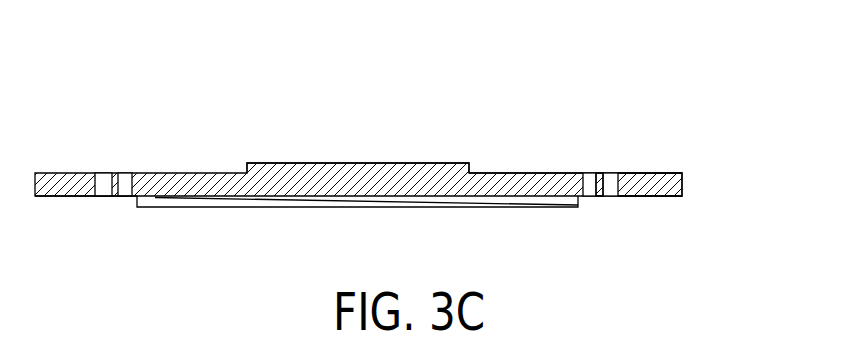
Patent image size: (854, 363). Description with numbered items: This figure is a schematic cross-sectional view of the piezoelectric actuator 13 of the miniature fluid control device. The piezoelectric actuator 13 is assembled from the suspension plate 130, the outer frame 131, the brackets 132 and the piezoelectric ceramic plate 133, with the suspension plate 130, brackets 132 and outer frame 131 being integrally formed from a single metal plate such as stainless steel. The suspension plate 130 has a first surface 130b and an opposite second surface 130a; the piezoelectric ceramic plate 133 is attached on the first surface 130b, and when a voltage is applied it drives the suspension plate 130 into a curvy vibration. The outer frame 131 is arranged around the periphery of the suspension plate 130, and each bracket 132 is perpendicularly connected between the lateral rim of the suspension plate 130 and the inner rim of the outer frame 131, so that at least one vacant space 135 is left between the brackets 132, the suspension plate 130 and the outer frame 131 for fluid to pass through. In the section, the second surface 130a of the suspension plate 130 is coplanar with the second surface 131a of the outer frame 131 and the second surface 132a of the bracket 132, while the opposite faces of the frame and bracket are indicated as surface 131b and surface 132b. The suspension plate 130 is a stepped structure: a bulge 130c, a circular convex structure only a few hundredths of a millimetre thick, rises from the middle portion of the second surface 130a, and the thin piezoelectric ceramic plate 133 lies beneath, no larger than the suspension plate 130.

The piezoelectric actuator 13 is at (110, 34).
The suspension plate 130 is at (223, 156).
The second surface of the suspension plate 130a is at (530, 171).
The first surface of the suspension plate 130b is at (135, 197).
The bulge 130c is at (358, 163).
The outer frame 131 is at (695, 181).
The second surface of the outer frame 131a is at (650, 172).
The second surface of frame portion 131b is at (665, 197).
The bracket 132 is at (606, 155).
The second surface of the bracket 132a is at (602, 171).
The second end of conductive pillar 132b is at (600, 197).
The piezoelectric ceramic plate 133 is at (420, 203).
The vacant space 135 is at (590, 190).